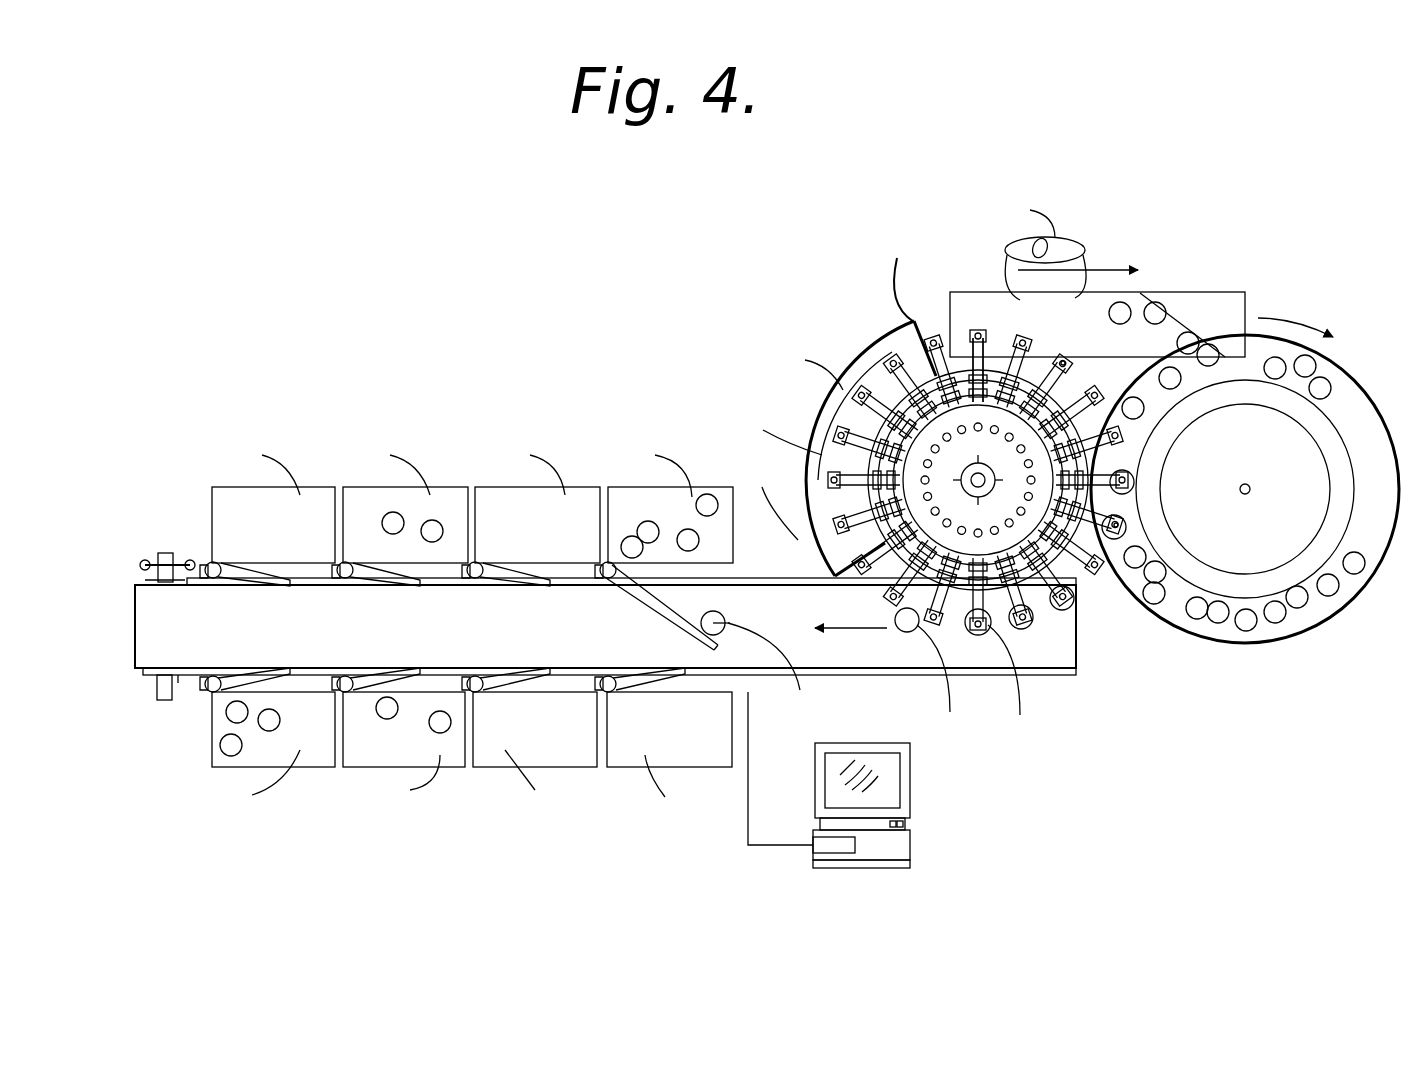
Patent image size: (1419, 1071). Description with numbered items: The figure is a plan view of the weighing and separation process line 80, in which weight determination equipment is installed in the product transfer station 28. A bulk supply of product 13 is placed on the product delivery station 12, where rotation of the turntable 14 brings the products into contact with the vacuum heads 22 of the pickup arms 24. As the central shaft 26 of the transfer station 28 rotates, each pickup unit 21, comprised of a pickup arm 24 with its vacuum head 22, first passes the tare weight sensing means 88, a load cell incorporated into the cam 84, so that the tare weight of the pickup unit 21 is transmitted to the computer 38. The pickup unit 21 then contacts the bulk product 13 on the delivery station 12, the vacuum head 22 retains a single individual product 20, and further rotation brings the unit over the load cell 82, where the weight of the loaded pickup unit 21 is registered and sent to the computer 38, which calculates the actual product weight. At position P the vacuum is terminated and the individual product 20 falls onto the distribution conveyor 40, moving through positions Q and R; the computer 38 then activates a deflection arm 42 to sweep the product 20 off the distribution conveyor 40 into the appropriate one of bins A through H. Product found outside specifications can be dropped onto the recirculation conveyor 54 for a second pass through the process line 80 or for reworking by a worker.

The process line 80 is at (387, 318).
The distribution conveyor 40 is at (172, 548).
The deflection arm 42 is at (222, 573).
The central shaft 26 is at (962, 484).
The cam 84 is at (890, 537).
The pickup unit 21 is at (880, 355).
The vacuum head 22 is at (942, 345).
The individual product 20 is at (1030, 626).
The tare weight sensing means 88 is at (1072, 372).
The load cell 82 is at (1103, 542).
The pickup arm 24 is at (871, 448).
The product transfer station 28 is at (790, 415).
The recirculation conveyor 54 is at (1140, 297).
The product delivery station 12 is at (1352, 345).
The turntable 14 is at (1360, 528).
The bulk product 13 is at (1300, 603).
The computer 38 is at (905, 802).